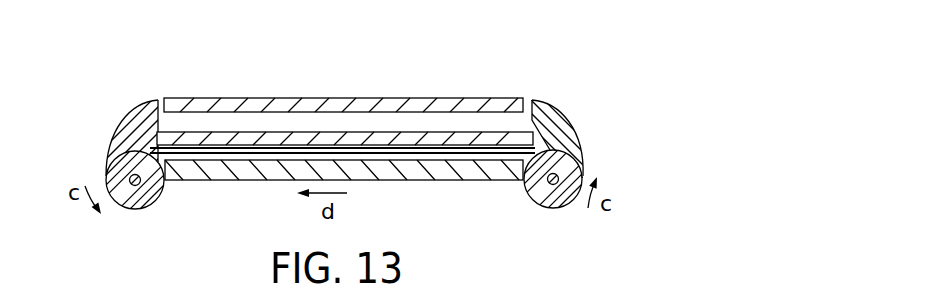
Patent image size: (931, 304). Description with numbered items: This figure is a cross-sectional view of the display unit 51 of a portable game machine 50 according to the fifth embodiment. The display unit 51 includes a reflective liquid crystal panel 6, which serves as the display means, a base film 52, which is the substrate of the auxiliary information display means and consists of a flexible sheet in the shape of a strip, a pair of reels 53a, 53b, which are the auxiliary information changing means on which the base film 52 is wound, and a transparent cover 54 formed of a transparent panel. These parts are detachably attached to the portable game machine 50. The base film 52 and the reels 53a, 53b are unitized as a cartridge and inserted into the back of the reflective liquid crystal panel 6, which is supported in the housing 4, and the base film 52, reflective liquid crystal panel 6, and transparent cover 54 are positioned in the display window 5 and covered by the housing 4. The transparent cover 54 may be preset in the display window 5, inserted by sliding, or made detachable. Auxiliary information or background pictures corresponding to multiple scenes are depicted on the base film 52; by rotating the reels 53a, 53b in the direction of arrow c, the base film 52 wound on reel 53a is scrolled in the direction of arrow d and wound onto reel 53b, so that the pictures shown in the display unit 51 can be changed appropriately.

The display window 5 is at (322, 78).
The transparent cover 54 is at (443, 98).
The portable game machine 50 is at (556, 75).
The reflective liquid crystal panel 6 is at (533, 138).
The display unit 51 is at (630, 113).
The housing 4 is at (577, 150).
The base film 52 is at (462, 153).
The reel 53a is at (553, 200).
The reel 53b is at (145, 200).